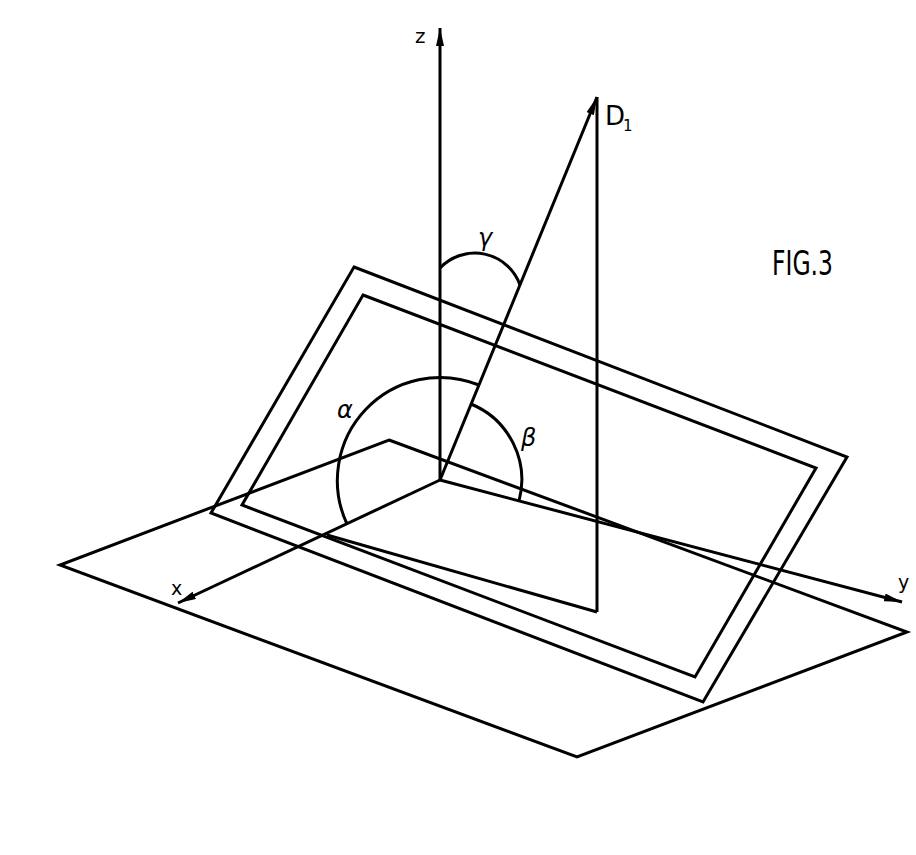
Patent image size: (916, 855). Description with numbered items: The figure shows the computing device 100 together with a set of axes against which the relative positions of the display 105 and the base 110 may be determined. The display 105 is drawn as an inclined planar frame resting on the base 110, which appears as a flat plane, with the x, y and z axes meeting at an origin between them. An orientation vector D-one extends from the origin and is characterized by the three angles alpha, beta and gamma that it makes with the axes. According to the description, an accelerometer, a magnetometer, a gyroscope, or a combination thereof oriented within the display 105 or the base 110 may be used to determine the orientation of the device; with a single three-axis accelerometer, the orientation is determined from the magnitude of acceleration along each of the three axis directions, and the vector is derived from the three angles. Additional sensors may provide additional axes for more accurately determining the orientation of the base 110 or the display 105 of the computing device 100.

The computing device 100 is at (171, 311).
The display 105 is at (766, 424).
The base 110 is at (122, 542).